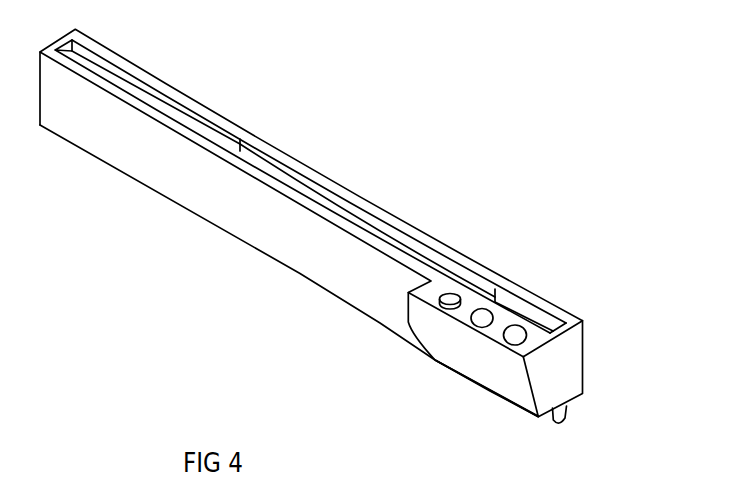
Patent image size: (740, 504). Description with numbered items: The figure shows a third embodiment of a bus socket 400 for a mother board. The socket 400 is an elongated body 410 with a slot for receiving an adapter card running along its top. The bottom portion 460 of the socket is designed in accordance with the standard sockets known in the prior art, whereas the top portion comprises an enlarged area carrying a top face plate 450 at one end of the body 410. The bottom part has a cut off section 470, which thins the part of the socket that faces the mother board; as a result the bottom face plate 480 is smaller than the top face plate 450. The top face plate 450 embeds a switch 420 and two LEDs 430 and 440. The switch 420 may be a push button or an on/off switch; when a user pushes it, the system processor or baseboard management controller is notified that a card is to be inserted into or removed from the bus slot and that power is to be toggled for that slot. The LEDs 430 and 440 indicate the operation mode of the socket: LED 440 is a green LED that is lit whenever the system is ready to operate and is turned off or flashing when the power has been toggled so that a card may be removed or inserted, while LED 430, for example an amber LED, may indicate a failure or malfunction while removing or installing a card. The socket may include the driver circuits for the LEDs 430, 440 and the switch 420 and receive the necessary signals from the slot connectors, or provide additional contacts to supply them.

The socket 400 is at (497, 245).
The rail body 410 is at (327, 202).
The switch 420 is at (442, 315).
The LED 430 is at (479, 328).
The LED 440 is at (512, 346).
The top face plate 450 is at (538, 337).
The bottom portion 460 is at (185, 117).
The cut off section 470 is at (508, 399).
The bottom face plate 480 is at (578, 400).